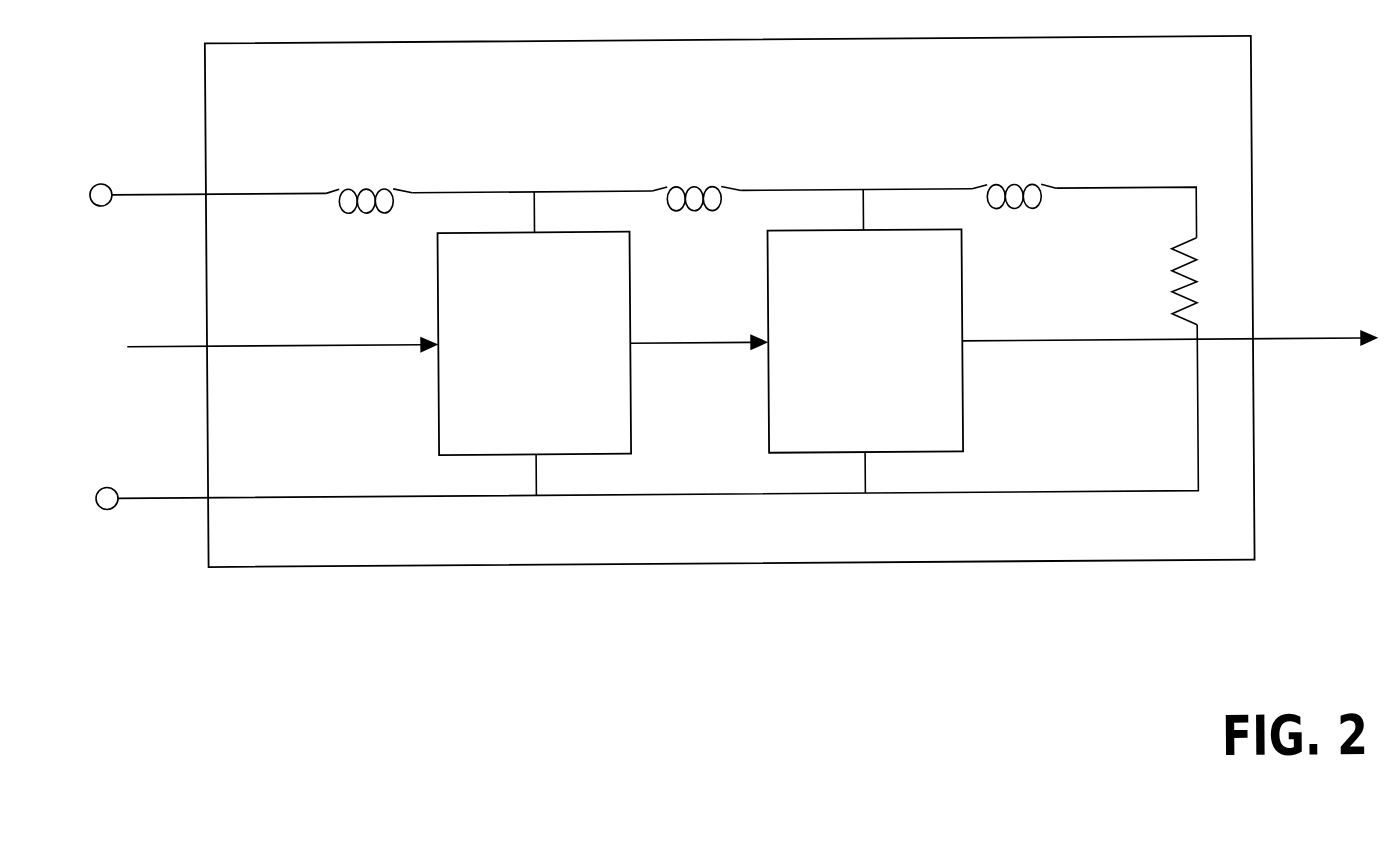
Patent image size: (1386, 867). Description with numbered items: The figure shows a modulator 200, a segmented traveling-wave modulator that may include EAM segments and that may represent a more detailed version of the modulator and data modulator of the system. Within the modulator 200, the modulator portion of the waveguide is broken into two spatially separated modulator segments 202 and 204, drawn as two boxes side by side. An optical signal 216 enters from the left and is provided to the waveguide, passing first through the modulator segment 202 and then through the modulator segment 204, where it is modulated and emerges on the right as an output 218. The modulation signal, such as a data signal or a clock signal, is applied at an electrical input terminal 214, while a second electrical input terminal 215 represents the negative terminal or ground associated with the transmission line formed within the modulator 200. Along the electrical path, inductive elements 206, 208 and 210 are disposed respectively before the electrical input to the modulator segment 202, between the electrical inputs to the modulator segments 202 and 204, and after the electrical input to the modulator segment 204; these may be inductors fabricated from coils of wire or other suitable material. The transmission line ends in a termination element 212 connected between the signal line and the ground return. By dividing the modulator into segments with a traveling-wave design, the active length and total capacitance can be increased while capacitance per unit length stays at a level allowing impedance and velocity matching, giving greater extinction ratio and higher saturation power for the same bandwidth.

The modulator 200 is at (920, 565).
The modulator segment 202 is at (631, 411).
The modulator segment 204 is at (962, 395).
The inductive element 206 is at (369, 173).
The inductive element 208 is at (684, 172).
The inductive element 210 is at (1018, 174).
The termination resistor 212 is at (1172, 253).
The electrical input terminal 214 is at (105, 180).
The electrical input terminal 215 is at (108, 506).
The optical signal 216 is at (140, 341).
The output 218 is at (1308, 346).